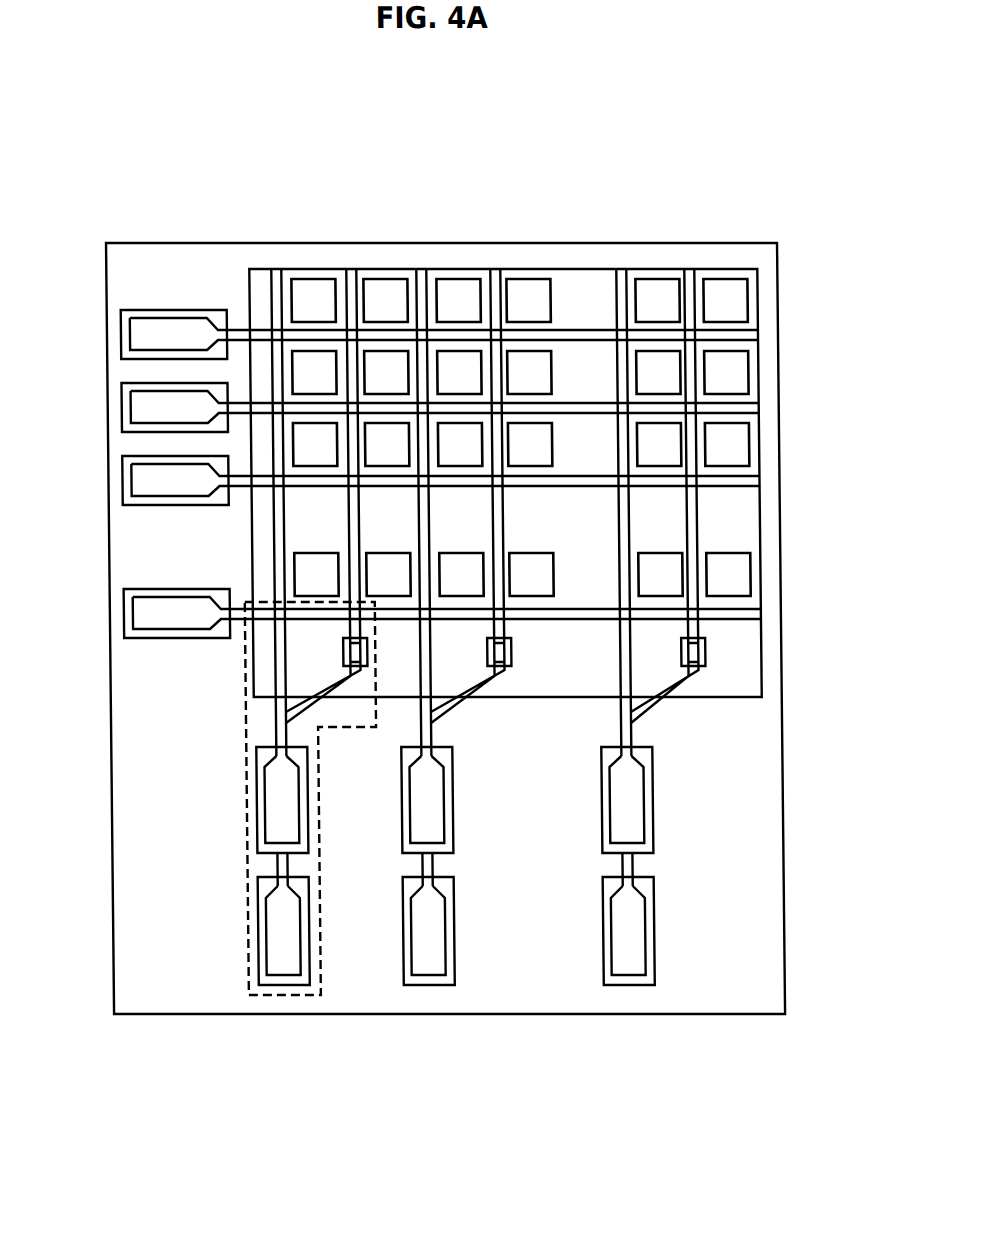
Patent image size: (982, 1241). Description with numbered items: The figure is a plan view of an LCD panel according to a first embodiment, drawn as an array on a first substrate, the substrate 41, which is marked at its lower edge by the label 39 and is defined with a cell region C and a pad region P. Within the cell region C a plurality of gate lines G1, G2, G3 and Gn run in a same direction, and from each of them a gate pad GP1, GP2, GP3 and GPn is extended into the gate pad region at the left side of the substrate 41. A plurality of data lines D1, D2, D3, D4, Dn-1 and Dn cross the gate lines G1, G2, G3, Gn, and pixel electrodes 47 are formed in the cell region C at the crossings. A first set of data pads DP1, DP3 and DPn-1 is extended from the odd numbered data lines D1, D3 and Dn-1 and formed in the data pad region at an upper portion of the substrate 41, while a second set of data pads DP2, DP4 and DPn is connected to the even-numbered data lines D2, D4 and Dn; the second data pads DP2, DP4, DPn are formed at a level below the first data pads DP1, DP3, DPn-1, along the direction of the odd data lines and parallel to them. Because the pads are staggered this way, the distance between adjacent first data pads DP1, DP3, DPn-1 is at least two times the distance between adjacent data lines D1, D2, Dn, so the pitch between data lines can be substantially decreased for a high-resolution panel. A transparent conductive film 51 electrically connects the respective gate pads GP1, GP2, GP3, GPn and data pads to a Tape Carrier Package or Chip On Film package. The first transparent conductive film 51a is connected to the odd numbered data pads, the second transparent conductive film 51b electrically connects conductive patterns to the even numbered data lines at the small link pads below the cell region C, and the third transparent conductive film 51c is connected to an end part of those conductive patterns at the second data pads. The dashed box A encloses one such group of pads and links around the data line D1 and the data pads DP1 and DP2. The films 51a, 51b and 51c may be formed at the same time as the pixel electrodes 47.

The substrate 41 is at (777, 800).
The array substrate 39 is at (463, 1040).
The pixel electrode 47 is at (738, 304).
The transparent conductive film 51 is at (140, 481).
The first transparent conductive film 51a is at (242, 800).
The second transparent conductive film 51b is at (363, 651).
The third transparent conductive film 51c is at (242, 919).
The cell region C is at (757, 531).
The pad region P is at (770, 902).
The region A is at (282, 997).
The gate line G1 is at (750, 335).
The gate line G2 is at (748, 408).
The gate line G3 is at (748, 482).
The gate line Gn is at (748, 615).
The data line D1 is at (277, 280).
The data line D2 is at (352, 280).
The data line D3 is at (422, 280).
The data line D4 is at (496, 280).
The data line Dn-1 is at (622, 280).
The data line Dn is at (690, 280).
The gate pad GP1 is at (129, 333).
The gate pad GP2 is at (129, 406).
The gate pad GP3 is at (129, 479).
The gate pad GPn is at (142, 613).
The first data pad DP1 is at (259, 832).
The second data pad DP2 is at (259, 951).
The first data pad DP3 is at (404, 807).
The second data pad DP4 is at (404, 940).
The first data pad DPn-1 is at (638, 803).
The second data pad DPn is at (638, 943).